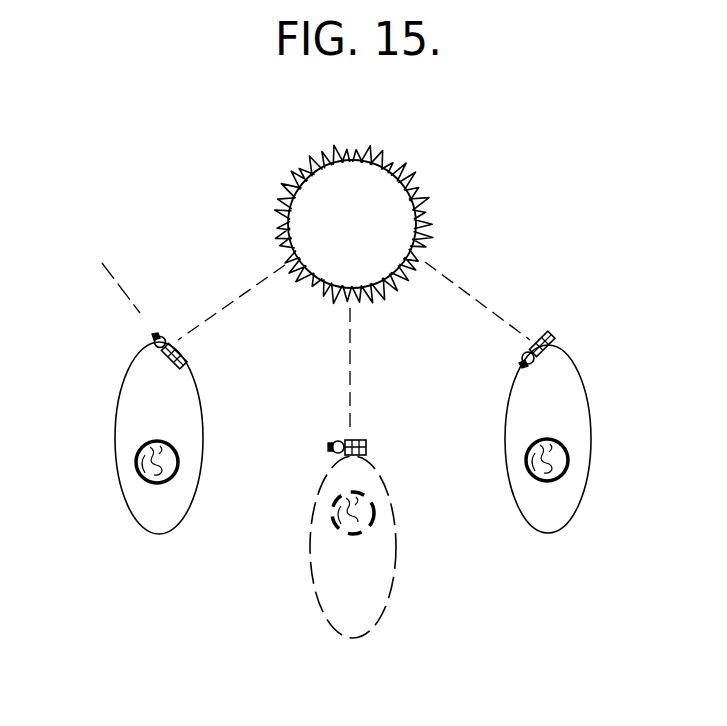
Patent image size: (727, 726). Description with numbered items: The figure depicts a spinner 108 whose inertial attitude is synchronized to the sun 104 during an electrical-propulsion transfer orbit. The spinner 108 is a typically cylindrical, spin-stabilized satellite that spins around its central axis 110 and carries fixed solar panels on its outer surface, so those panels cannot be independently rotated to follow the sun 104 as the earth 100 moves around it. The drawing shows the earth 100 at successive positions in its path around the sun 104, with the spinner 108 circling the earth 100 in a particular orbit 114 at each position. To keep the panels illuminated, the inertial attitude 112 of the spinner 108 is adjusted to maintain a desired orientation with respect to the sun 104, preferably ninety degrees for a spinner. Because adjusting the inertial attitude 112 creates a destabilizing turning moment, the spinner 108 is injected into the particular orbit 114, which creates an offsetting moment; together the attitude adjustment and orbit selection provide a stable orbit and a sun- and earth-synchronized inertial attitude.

The earth 100 is at (135, 468).
The sun 104 is at (410, 182).
The spinner 108 is at (156, 329).
The central axis 110 is at (178, 343).
The inertial attitude 112 is at (142, 317).
The orbit 114 is at (203, 420).